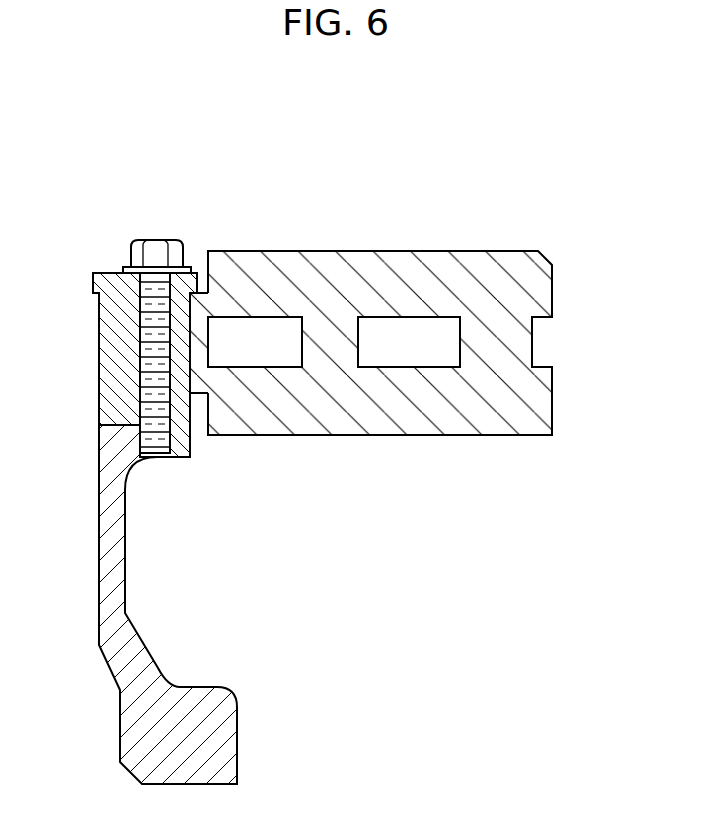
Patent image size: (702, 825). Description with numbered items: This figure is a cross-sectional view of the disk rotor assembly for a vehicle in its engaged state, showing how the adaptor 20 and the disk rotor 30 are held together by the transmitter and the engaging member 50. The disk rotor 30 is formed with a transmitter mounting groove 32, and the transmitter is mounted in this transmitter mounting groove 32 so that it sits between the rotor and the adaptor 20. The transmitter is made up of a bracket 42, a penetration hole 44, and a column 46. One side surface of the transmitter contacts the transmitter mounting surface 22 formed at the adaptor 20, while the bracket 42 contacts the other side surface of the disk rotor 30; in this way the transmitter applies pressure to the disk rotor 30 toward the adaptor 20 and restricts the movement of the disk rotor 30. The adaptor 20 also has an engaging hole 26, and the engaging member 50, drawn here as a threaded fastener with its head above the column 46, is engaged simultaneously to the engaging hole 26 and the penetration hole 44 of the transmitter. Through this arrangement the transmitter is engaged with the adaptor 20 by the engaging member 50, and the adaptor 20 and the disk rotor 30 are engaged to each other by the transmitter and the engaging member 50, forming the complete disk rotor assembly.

The adaptor 20 is at (132, 604).
The transmitter mounting surface 22 is at (118, 422).
The engaging hole 26 is at (138, 436).
The disk rotor 30 is at (528, 283).
The transmitter mounting groove 32 is at (102, 325).
The bracket 42 is at (210, 312).
The penetration hole 44 is at (140, 353).
The column 46 is at (117, 318).
The engaging member 50 is at (108, 285).